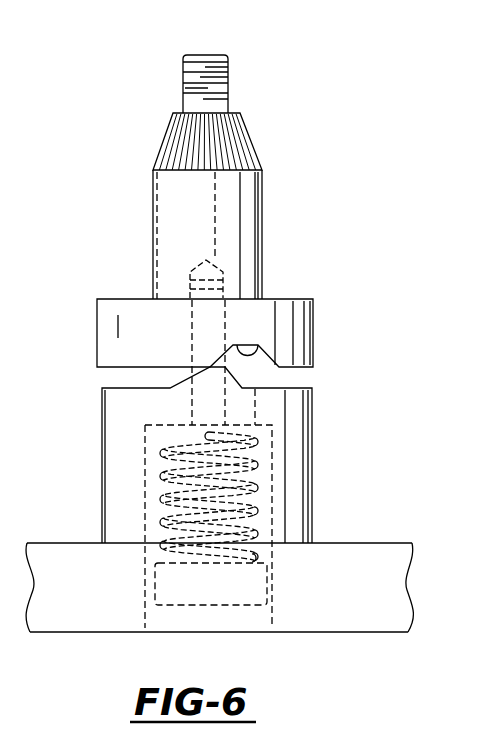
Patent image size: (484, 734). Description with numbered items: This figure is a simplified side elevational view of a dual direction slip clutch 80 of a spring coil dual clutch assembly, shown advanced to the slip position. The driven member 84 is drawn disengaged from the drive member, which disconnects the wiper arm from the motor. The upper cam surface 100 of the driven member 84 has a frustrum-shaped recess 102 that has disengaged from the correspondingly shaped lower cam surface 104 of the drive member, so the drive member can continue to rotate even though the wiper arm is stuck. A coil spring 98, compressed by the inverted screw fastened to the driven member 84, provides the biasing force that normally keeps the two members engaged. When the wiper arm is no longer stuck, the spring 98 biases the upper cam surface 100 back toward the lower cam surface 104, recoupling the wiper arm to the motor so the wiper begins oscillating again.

The latch assembly 80 is at (297, 144).
The driven member 84 is at (245, 198).
The coil spring 98 is at (262, 462).
The upper cam surface 100 is at (121, 367).
The frustrum-shaped recess 102 is at (261, 352).
The lower cam surface 104 is at (285, 388).